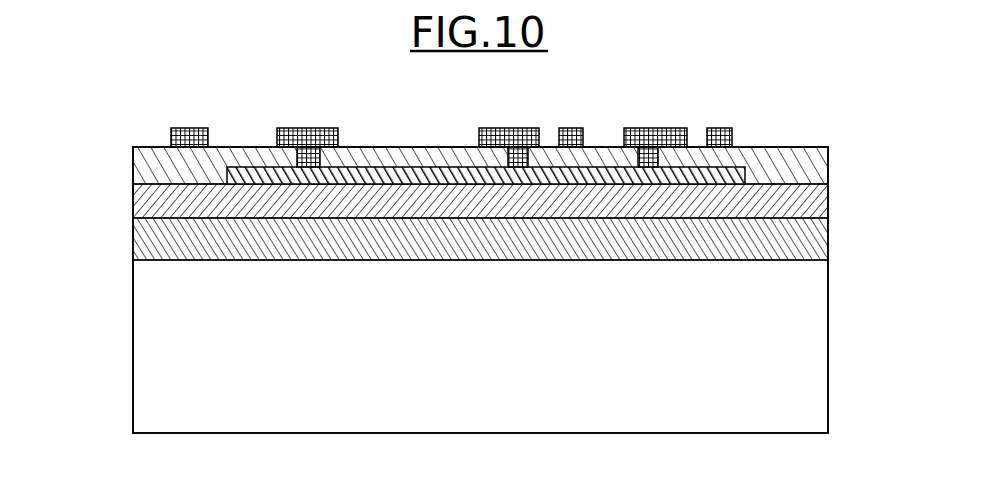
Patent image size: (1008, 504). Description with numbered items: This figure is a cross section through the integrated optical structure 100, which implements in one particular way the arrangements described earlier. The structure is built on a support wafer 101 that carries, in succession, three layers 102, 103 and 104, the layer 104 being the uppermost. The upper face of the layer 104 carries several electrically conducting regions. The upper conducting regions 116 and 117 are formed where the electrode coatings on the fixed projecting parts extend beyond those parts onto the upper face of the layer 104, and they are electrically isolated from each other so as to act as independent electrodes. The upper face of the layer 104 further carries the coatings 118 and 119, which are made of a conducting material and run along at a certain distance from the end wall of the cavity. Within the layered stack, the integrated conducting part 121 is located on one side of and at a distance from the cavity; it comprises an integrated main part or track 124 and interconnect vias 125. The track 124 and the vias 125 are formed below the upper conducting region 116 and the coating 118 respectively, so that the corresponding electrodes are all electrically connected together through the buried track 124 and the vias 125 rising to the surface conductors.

The integrated optical structure 100 is at (519, 253).
The support wafer 101 is at (807, 327).
The layer 102 is at (807, 243).
The layer 103 is at (807, 206).
The layer 104 is at (805, 165).
The upper conducting region 116 is at (720, 128).
The upper conducting region 117 is at (512, 128).
The coating 118 is at (187, 128).
The coating 119 is at (310, 128).
The integrated conducting part 121 is at (341, 157).
The track 124 is at (442, 178).
The interconnect via 125 is at (298, 159).